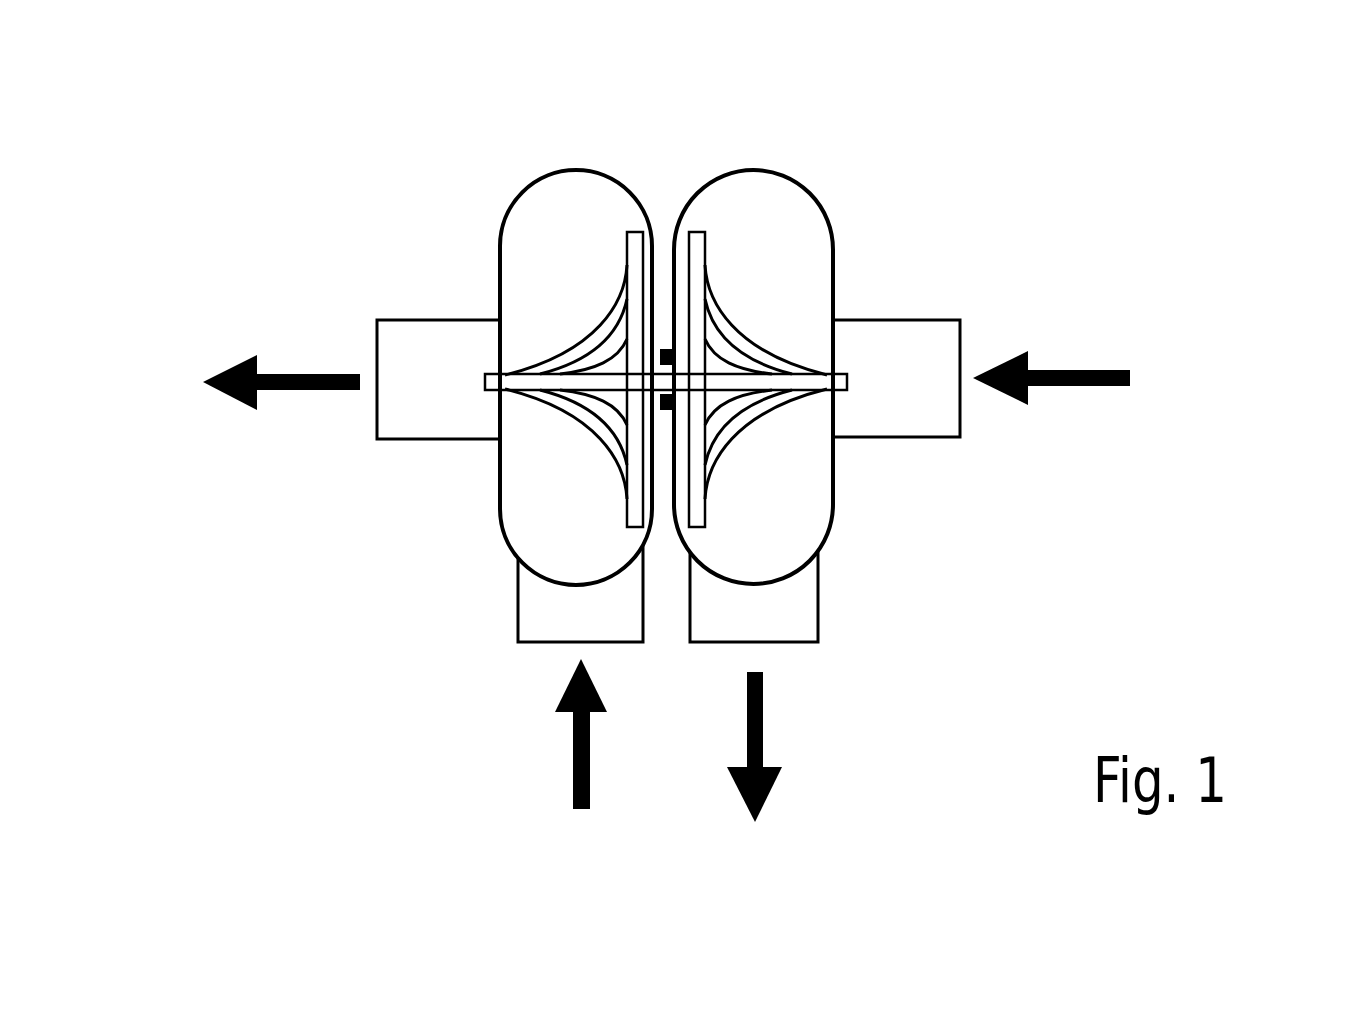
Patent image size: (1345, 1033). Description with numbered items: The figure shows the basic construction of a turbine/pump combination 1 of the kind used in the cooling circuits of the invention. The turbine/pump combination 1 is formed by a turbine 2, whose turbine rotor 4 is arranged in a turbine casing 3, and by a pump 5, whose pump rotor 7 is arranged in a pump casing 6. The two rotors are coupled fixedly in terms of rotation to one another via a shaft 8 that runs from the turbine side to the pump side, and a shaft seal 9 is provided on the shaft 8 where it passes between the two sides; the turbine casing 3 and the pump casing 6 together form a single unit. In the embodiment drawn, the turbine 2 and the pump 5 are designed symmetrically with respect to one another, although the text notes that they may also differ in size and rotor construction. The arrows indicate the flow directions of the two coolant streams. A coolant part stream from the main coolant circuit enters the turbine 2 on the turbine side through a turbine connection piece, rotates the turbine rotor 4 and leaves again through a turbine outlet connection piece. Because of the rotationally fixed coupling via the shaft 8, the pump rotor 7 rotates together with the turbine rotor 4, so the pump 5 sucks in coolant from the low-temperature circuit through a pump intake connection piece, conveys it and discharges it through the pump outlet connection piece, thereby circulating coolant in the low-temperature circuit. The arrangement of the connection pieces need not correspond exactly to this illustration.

The turbine/pump combination 1 is at (720, 470).
The turbine 2 is at (436, 350).
The turbine casing 3 is at (498, 495).
The turbine rotor 4 is at (610, 300).
The pump 5 is at (893, 348).
The pump casing 6 is at (834, 242).
The pump rotor 7 is at (707, 298).
The shaft 8 is at (673, 378).
The shaft seal 9 is at (672, 403).